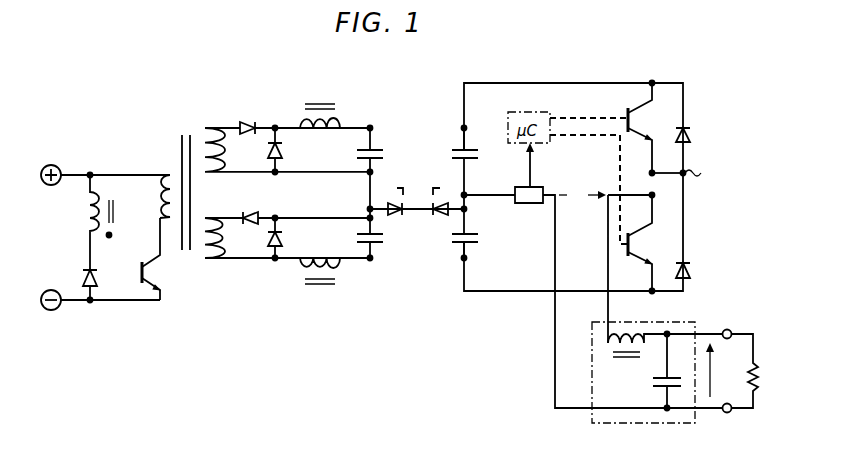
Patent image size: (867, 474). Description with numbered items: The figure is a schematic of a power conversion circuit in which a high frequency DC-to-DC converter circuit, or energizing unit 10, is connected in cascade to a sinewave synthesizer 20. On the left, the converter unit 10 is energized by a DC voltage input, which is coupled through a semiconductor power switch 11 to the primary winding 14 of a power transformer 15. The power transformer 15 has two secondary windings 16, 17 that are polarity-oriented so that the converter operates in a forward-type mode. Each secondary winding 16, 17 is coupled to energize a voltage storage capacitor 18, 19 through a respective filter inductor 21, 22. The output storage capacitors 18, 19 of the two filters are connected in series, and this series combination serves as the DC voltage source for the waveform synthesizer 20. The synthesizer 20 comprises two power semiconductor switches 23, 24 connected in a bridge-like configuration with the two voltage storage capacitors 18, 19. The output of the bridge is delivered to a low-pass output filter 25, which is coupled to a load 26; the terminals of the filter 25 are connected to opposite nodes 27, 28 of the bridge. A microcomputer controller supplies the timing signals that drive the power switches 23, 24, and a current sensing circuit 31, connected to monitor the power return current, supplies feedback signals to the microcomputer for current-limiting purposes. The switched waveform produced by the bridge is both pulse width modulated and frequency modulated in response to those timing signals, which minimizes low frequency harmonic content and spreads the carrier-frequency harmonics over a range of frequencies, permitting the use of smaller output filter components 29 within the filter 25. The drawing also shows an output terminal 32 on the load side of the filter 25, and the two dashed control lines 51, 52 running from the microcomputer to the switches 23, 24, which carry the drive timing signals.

The energizing unit 10 is at (112, 335).
The semiconductor power switch 11 is at (141, 259).
The primary winding 14 is at (152, 196).
The power transformer 15 is at (182, 150).
The secondary winding 16 is at (287, 158).
The secondary winding 17 is at (287, 246).
The voltage storage capacitor 18 is at (380, 168).
The voltage storage capacitor 19 is at (380, 234).
The sinewave synthesizer 20 is at (589, 250).
The filter inductor 21 is at (320, 107).
The filter inductor 22 is at (320, 281).
The power semiconductor switch 23 is at (649, 128).
The power semiconductor switch 24 is at (640, 268).
The low-pass output filter 25 is at (659, 389).
The load 26 is at (755, 371).
The node 27 is at (470, 193).
The node 28 is at (686, 203).
The output filter components 29 is at (667, 356).
The current sensing circuit 31 is at (595, 275).
The output terminal 32 is at (727, 329).
The control line to Q1 51 is at (580, 118).
The control line to Q2 52 is at (612, 144).